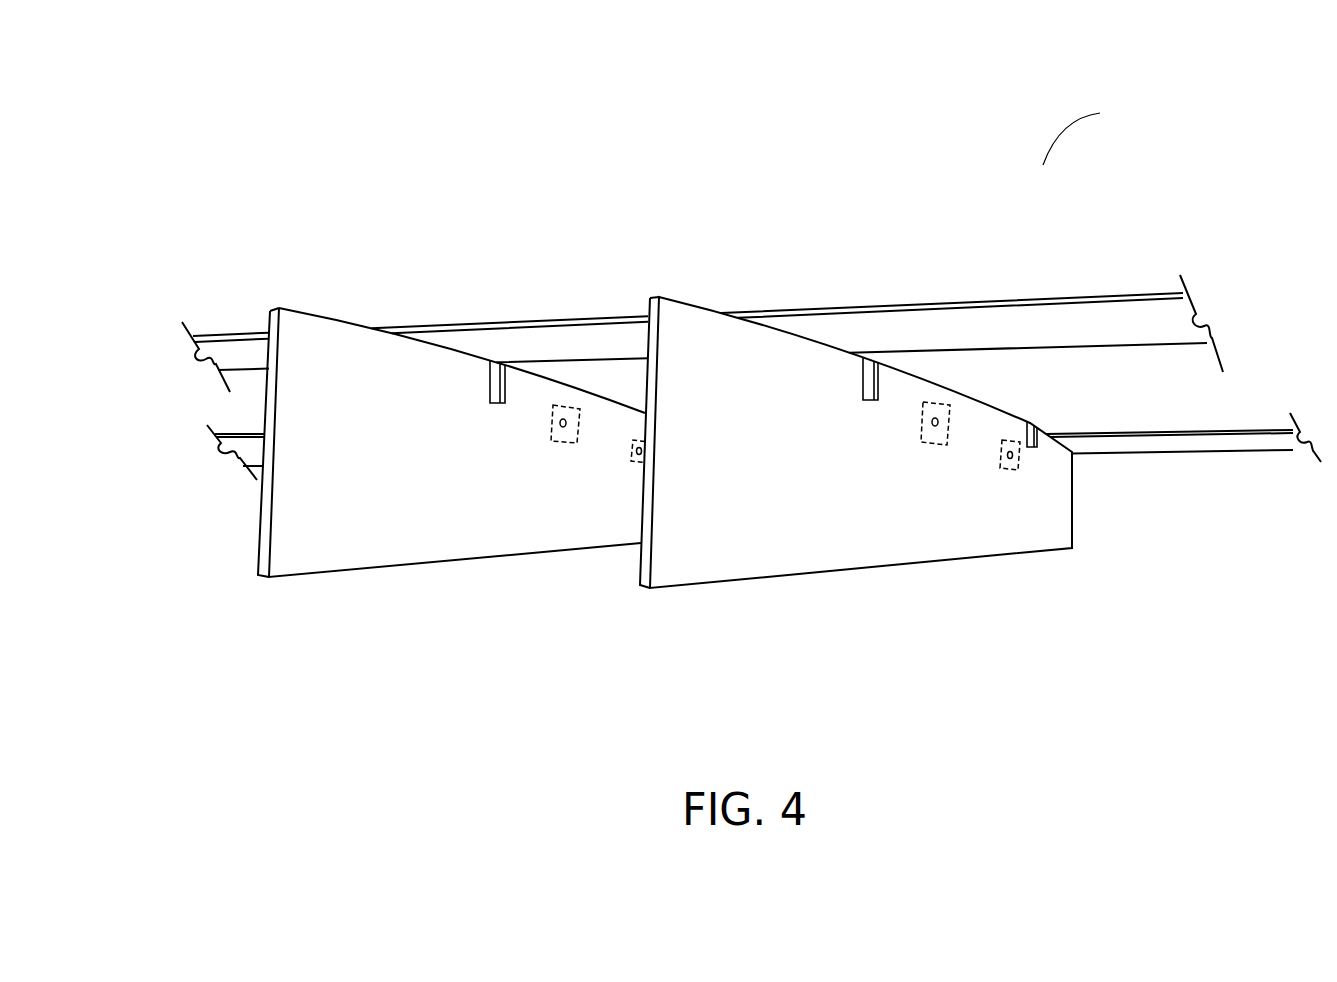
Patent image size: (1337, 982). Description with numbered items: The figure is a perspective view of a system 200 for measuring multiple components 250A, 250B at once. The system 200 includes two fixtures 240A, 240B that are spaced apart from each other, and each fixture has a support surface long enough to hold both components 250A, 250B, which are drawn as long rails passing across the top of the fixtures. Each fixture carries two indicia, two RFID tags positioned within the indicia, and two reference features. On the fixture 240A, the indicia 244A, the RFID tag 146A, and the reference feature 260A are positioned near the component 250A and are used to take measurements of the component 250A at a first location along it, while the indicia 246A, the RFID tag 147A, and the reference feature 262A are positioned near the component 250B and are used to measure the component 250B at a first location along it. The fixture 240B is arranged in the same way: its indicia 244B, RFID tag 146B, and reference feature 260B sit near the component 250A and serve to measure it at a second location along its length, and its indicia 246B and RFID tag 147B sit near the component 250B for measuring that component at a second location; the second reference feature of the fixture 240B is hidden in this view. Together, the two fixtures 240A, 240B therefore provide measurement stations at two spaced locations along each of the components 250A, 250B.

The system 200 is at (1090, 137).
The component 250A is at (873, 302).
The component 250B is at (1232, 437).
The fixture 240A is at (919, 583).
The fixture 240B is at (437, 580).
The reference feature 260A is at (863, 388).
The reference feature 260B is at (490, 392).
The reference feature 262A is at (1065, 412).
The RFID tag 146A is at (923, 424).
The RFID tag 146B is at (552, 431).
The RFID tag 147A is at (1003, 450).
The RFID tag 147B is at (643, 453).
The indicia 244A is at (930, 445).
The indicia 244B is at (557, 441).
The indicia 246A is at (1007, 470).
The indicia 246B is at (641, 467).